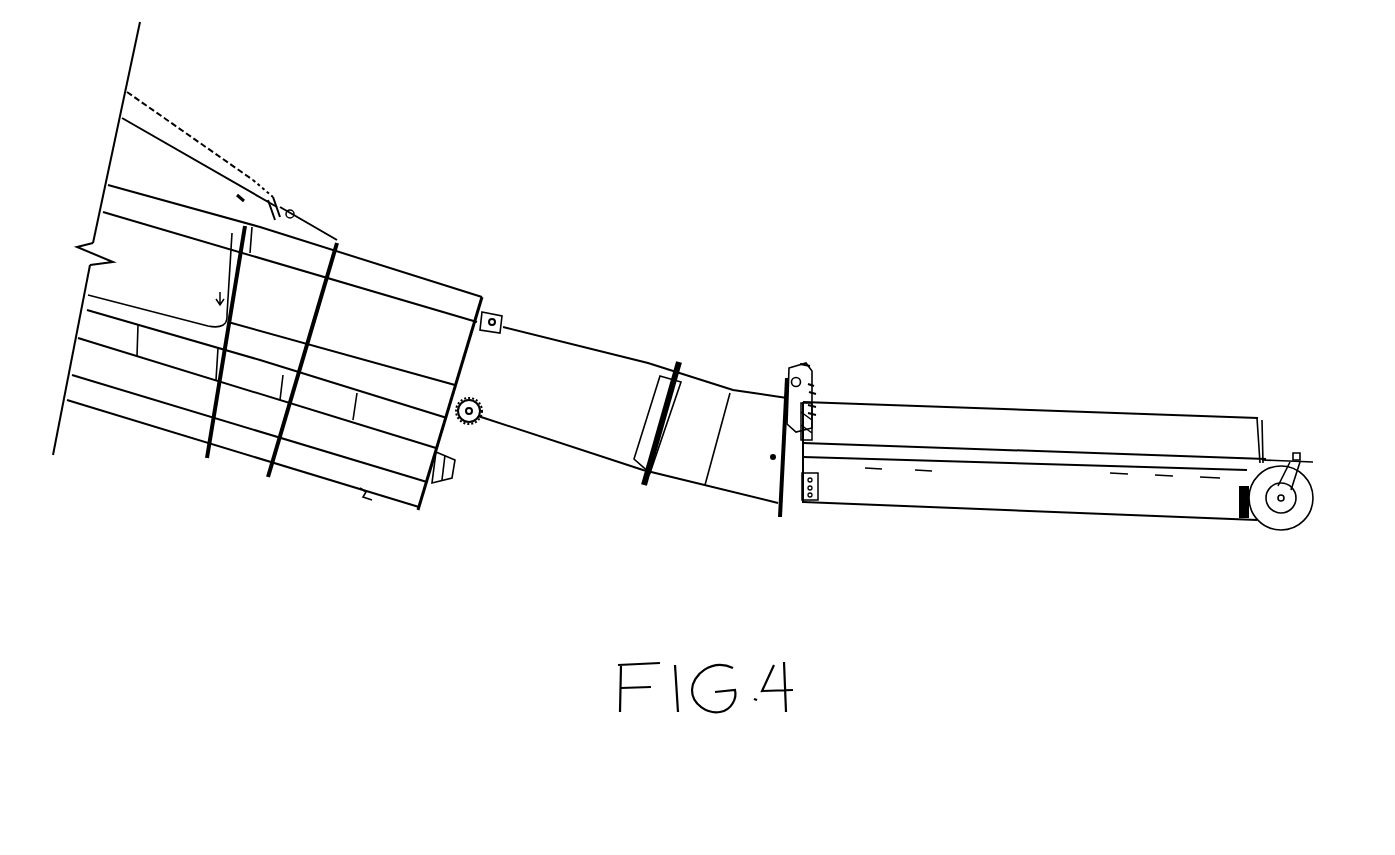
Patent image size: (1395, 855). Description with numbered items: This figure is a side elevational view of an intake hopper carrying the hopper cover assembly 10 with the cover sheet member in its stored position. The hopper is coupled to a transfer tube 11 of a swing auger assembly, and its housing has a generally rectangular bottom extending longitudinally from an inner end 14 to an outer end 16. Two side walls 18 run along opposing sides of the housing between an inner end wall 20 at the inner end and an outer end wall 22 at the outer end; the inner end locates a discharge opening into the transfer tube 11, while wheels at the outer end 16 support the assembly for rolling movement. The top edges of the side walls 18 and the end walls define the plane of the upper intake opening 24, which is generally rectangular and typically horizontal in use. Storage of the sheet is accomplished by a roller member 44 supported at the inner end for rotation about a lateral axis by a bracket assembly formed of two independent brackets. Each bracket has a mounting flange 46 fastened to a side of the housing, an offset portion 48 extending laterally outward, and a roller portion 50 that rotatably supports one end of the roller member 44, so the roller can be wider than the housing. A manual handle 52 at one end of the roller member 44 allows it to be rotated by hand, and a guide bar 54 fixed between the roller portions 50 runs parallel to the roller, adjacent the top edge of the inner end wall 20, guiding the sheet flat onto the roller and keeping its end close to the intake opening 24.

The hopper cover assembly 10 is at (928, 355).
The transfer tube 11 is at (331, 266).
The inner end 14 is at (798, 495).
The outer end 16 is at (1091, 396).
The side walls 18 is at (1030, 345).
The inner end wall 20 is at (739, 461).
The outer end wall 22 is at (1314, 451).
The upper intake opening 24 is at (1034, 370).
The roller member 44 is at (754, 353).
The mounting flanges 46 is at (888, 384).
The offset portion 48 is at (902, 348).
The roller portion 50 is at (861, 336).
The manual handle 52 is at (840, 289).
The guide bar 54 is at (895, 299).